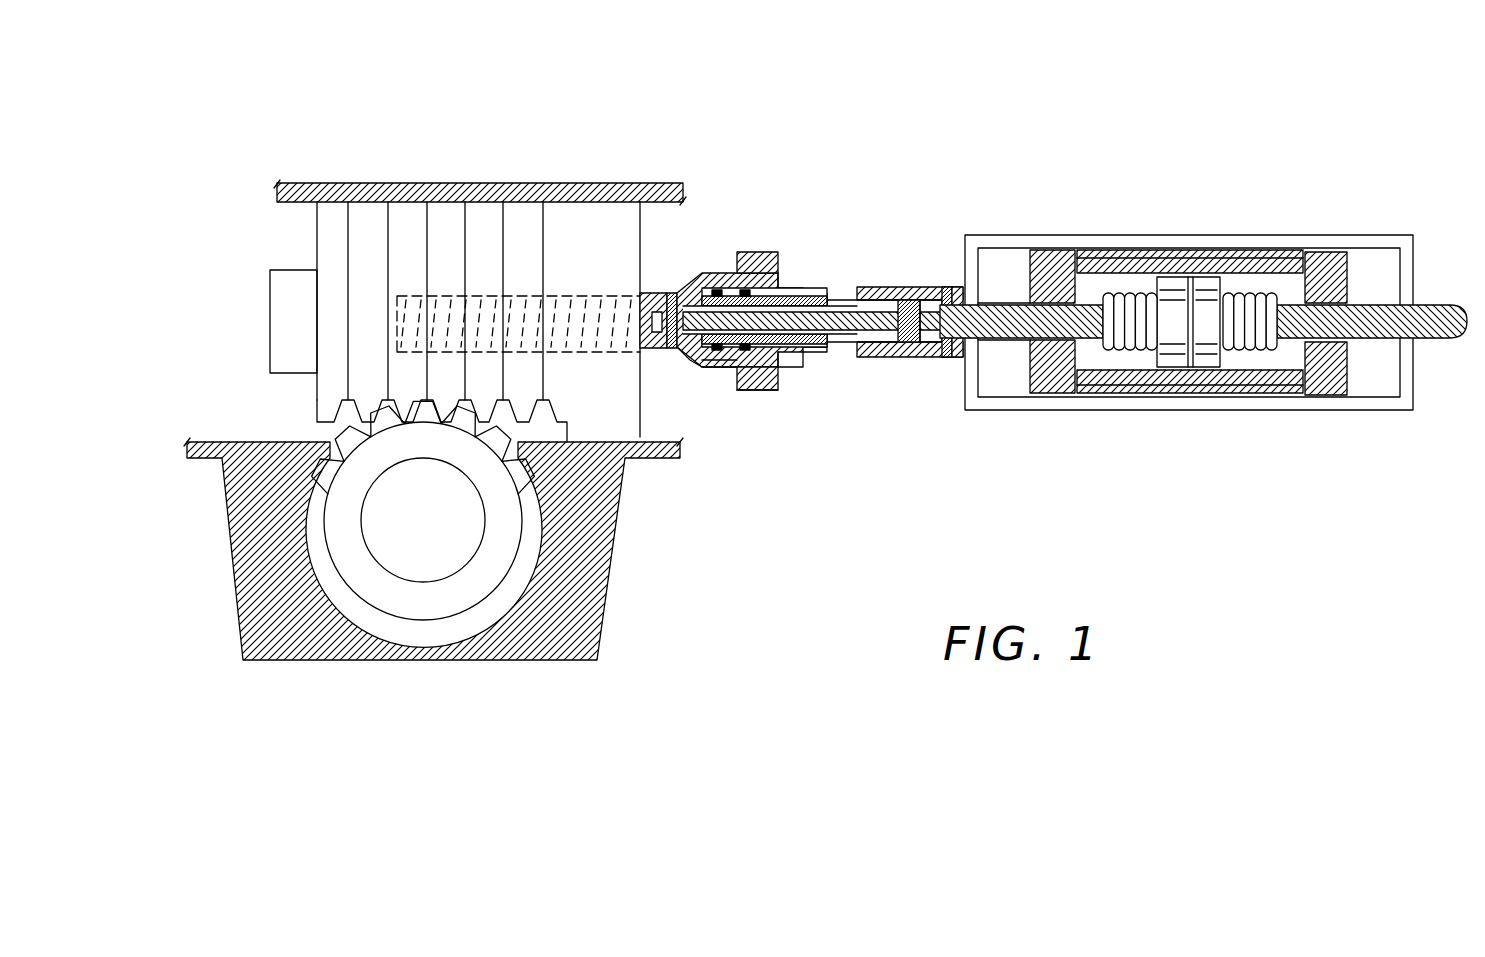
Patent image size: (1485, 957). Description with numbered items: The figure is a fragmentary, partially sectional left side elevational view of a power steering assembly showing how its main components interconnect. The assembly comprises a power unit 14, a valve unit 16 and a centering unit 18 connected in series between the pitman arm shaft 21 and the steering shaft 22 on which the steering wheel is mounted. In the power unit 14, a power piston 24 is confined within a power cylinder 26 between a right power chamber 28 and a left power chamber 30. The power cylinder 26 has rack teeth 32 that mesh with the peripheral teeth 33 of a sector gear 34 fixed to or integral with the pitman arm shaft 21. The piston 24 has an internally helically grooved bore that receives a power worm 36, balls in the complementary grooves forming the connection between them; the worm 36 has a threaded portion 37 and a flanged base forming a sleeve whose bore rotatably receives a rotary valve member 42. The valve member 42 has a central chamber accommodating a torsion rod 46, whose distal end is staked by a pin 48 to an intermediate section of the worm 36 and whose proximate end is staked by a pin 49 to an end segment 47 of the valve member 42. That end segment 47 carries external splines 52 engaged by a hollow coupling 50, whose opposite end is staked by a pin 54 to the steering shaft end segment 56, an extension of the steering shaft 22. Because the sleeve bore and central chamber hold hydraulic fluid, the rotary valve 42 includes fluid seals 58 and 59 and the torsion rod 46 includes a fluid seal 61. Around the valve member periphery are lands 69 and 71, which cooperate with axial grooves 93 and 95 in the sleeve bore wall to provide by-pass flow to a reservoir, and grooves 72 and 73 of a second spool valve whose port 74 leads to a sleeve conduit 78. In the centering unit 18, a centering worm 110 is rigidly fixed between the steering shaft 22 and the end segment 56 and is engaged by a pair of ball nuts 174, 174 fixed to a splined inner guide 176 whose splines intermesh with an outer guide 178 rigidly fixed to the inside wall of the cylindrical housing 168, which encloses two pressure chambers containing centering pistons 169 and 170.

The power unit 14 is at (462, 125).
The valve unit 16 is at (826, 175).
The centering unit 18 is at (1095, 177).
The pitman arm shaft 21 is at (392, 522).
The steering shaft 22 is at (1432, 342).
The power piston 24 is at (525, 215).
The power cylinder 26 is at (338, 183).
The right power chamber 28 is at (665, 230).
The left power chamber 30 is at (270, 238).
The rack teeth 32 is at (325, 408).
The peripheral teeth 33 is at (350, 433).
The sector gear 34 is at (365, 583).
The power worm 36 is at (553, 293).
The threaded portion 37 is at (583, 350).
The rotary valve member 42 is at (832, 357).
The torsion rod 46 is at (840, 280).
The end segment 47 is at (893, 285).
The pin 48 is at (675, 350).
The pin 49 is at (880, 357).
The hollow coupling 50 is at (940, 280).
The external splines 52 is at (870, 285).
The pin 54 is at (943, 357).
The steering shaft end segment 56 is at (1002, 298).
The fluid seal 58 is at (742, 277).
The fluid seal 59 is at (795, 277).
The fluid seal 61 is at (873, 357).
The land 69 is at (718, 370).
The land 71 is at (718, 273).
The groove 72 is at (755, 277).
The groove 73 is at (755, 393).
The port 74 is at (790, 370).
The sleeve conduit 78 is at (782, 370).
The axial groove 93 is at (730, 370).
The axial groove 95 is at (725, 277).
The centering worm 110 is at (1245, 393).
The cylindrical housing 168 is at (1120, 233).
The centering piston 169 is at (1352, 252).
The centering piston 170 is at (1020, 353).
The ball nut 174 is at (1157, 280).
The splined inner guide 176 is at (1278, 255).
The outer guide 178 is at (1200, 272).